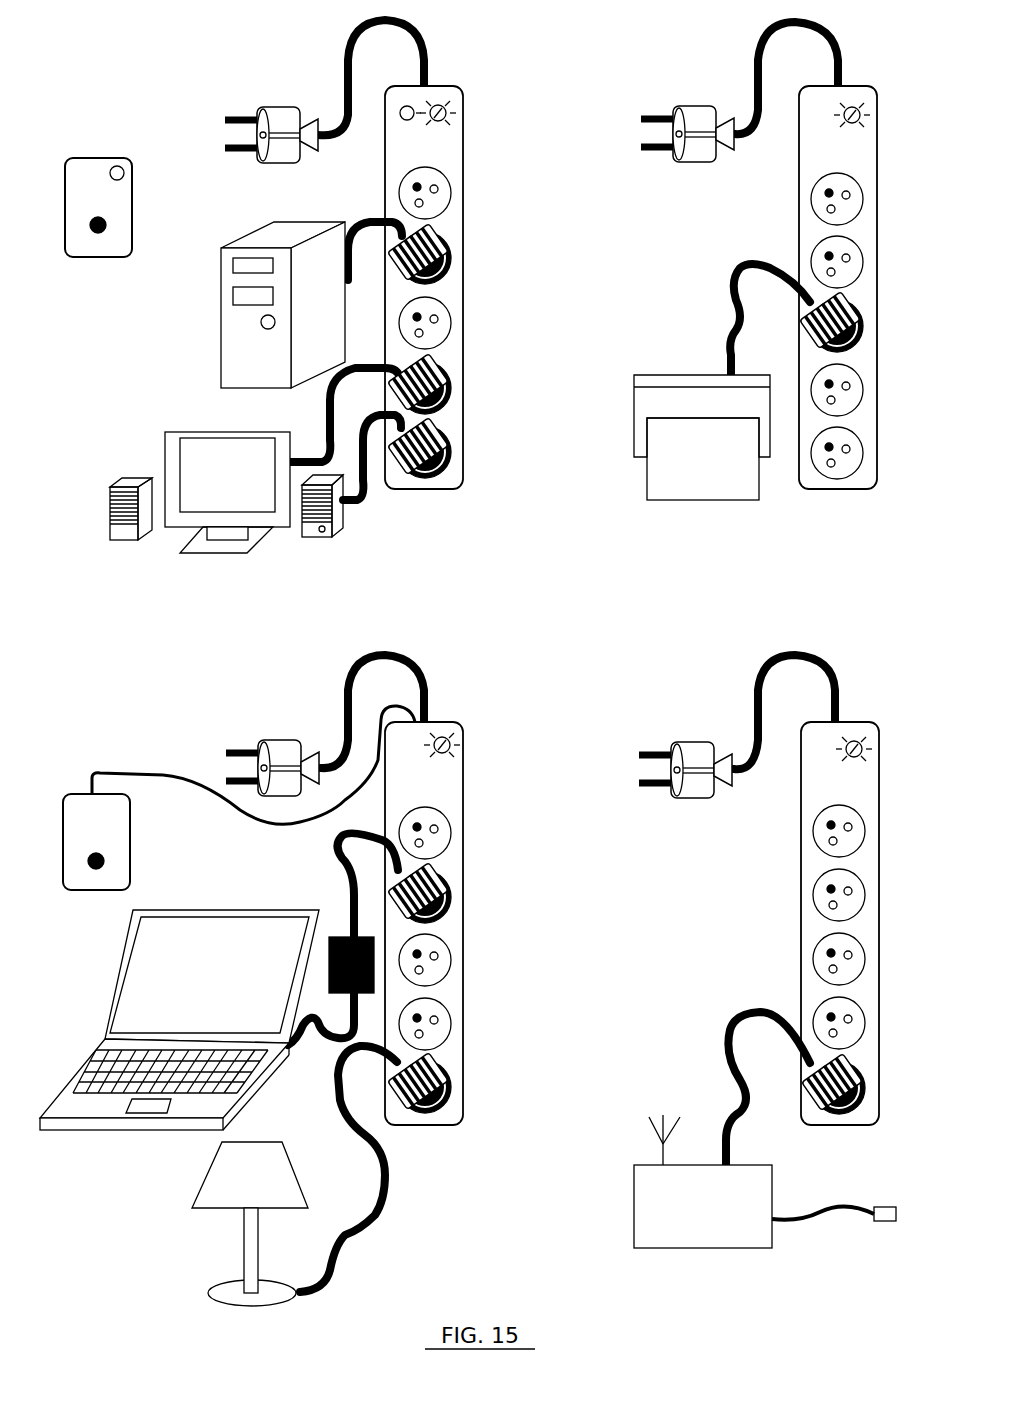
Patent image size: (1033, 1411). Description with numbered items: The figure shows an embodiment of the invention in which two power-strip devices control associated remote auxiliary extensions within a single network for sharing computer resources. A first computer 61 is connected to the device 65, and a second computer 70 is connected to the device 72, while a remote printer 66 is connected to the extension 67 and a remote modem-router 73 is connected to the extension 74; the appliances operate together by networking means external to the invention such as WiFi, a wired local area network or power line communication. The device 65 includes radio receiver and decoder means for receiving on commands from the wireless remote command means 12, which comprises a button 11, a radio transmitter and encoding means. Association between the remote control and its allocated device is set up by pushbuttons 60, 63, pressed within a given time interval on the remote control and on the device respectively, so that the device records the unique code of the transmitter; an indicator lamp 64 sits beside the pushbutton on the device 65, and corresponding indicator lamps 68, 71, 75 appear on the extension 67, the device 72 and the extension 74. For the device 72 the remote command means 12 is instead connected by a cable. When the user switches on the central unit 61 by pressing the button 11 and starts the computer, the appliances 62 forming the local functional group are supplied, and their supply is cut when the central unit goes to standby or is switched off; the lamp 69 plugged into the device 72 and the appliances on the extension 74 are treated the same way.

The button 11 is at (98, 233).
The wireless remote command means 12 is at (90, 158).
The pushbutton 60 is at (125, 173).
The first computer 61 is at (220, 332).
The appliances 62 is at (313, 540).
The pushbutton 63 is at (409, 105).
The indicator lamp 64 is at (450, 108).
The device 65 is at (463, 162).
The remote printer 66 is at (700, 375).
The extension 67 is at (798, 172).
The indicator lamp 68 is at (873, 88).
The lamp 69 is at (244, 1262).
The second computer 70 is at (241, 910).
The indicator lamp 71 is at (462, 738).
The device 72 is at (465, 790).
The remote modem-router 73 is at (634, 1200).
The extension 74 is at (801, 793).
The indicator lamp 75 is at (877, 745).